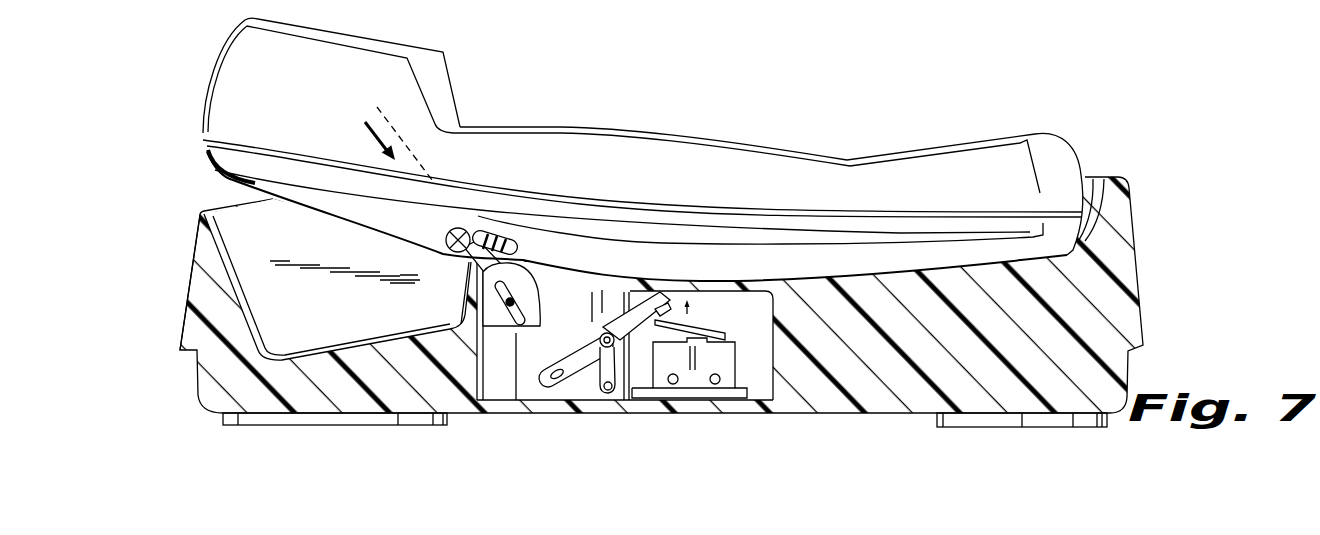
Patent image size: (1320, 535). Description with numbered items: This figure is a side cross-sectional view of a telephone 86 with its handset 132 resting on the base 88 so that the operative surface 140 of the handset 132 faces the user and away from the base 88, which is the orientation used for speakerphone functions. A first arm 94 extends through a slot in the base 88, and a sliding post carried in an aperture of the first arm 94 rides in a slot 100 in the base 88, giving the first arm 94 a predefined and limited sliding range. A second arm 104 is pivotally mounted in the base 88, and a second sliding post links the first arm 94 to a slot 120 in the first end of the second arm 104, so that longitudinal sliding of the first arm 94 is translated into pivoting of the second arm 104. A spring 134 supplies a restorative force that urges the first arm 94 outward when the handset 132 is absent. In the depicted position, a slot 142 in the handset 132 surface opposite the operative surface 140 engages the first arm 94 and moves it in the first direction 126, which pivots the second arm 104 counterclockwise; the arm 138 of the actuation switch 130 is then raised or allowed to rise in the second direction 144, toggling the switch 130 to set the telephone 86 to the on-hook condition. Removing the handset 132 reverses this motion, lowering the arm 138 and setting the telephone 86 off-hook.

The telephone 86 is at (175, 386).
The base 88 is at (187, 313).
The first arm 94 is at (478, 327).
The slot 100 is at (520, 295).
The second arm 104 is at (625, 312).
The slot 120 is at (545, 383).
The first direction 126 is at (370, 133).
The actuation switch 130 is at (722, 364).
The handset 132 is at (190, 98).
The spring 134 is at (585, 352).
The arm 138 is at (708, 337).
The operative surface 140 is at (500, 113).
The slot 142 is at (477, 232).
The second direction 144 is at (700, 290).